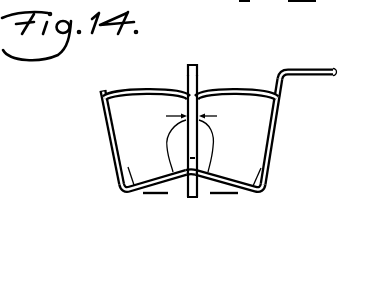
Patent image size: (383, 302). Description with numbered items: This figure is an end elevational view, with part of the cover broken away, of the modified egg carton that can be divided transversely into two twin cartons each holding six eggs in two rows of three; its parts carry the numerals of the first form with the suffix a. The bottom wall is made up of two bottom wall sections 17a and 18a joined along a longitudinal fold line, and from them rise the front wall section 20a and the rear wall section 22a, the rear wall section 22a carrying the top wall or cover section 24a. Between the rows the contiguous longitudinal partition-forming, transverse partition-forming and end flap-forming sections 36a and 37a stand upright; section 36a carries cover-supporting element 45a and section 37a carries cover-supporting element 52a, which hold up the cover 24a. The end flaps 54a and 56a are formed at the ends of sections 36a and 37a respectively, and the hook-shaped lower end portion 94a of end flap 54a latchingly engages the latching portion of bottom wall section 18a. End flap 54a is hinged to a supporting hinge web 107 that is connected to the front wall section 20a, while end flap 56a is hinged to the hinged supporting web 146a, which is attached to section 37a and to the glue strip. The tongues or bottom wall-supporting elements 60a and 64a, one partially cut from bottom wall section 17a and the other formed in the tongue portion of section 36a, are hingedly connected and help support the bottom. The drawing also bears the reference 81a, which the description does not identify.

The supporting hinge web 107 is at (127, 95).
The cover-supporting element 45a is at (187, 72).
The cover-supporting element 52a is at (198, 76).
The hinged supporting web 146a is at (238, 82).
The top wall or cover section 24a is at (318, 75).
The rear wall section 22a is at (284, 123).
The front wall section 20a is at (109, 128).
The end wall or end flap 54a is at (128, 149).
The end wall or end flap 56a is at (247, 148).
The longitudinal partition-forming, transverse partition-forming and end flap-formin 36a is at (154, 117).
The longitudinal partition-forming, transverse partition-forming and end flap-formin 37a is at (229, 118).
The bottom wall section 18a is at (143, 192).
The bottom wall section 17a is at (239, 195).
The hook-shaped lower end portion 94a is at (172, 191).
The tongue or bottom wall-supporting element 60a is at (179, 194).
The tongue or bottom wall-supporting element 64a is at (203, 194).
The lower portion 81a is at (221, 194).